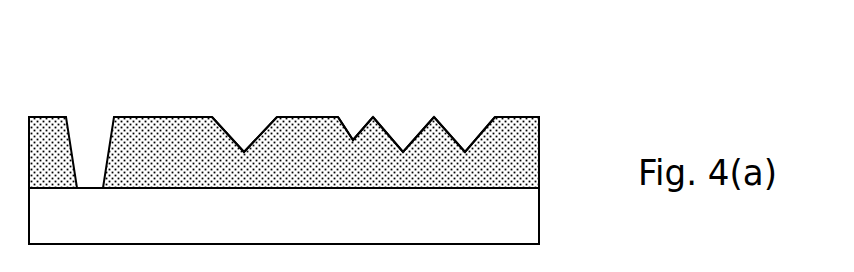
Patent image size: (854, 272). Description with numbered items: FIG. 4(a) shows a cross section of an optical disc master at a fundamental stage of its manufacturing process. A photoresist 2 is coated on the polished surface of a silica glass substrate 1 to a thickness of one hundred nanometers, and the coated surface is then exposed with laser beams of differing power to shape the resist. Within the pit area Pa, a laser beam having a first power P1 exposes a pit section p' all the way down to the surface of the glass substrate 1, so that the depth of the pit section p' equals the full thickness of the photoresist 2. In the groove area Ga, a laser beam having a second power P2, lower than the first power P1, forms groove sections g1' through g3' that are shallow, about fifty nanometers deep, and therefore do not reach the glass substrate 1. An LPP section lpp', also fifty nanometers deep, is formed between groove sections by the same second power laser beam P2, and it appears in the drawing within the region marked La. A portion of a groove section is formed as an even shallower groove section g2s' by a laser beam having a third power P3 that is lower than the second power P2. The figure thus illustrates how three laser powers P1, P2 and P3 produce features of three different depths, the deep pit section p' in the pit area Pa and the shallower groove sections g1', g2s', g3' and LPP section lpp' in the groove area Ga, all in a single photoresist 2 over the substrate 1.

The glass substrate 1 is at (539, 207).
The photoresist 2 is at (539, 160).
The pit area Pa is at (93, 221).
The groove area Ga is at (304, 221).
The lens region La is at (409, 221).
The first power laser beam P1 is at (89, 50).
The second power laser beam P2 is at (244, 50).
The third power laser beam P3 is at (355, 50).
The pit section p' is at (109, 138).
The groove section g1' is at (226, 120).
The shallow groove section g2s' is at (329, 114).
The LPP section lpp' is at (411, 116).
The groove section g3' is at (482, 120).